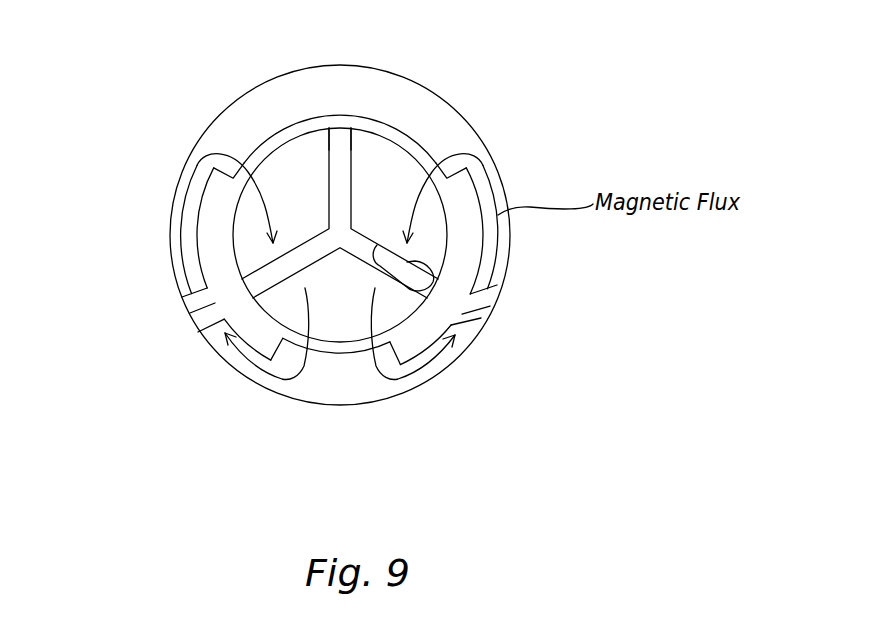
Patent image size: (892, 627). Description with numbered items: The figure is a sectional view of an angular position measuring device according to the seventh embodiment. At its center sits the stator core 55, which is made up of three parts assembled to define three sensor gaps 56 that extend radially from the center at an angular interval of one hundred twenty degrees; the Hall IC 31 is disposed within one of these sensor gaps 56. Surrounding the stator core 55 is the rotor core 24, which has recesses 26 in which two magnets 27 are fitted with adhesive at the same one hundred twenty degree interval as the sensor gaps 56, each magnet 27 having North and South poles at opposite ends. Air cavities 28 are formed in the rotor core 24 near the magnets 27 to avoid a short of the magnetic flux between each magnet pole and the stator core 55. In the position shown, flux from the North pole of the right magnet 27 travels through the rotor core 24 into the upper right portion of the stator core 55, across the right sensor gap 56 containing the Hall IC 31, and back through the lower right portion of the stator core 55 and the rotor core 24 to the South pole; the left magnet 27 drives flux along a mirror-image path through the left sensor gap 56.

The rotor core 24 is at (472, 126).
The recess 26 is at (188, 305).
The magnet 27 is at (197, 318).
The air cavity 28 is at (220, 246).
The Hall IC 31 is at (375, 290).
The stator core 55 is at (374, 160).
The sensor gap 56 is at (437, 270).